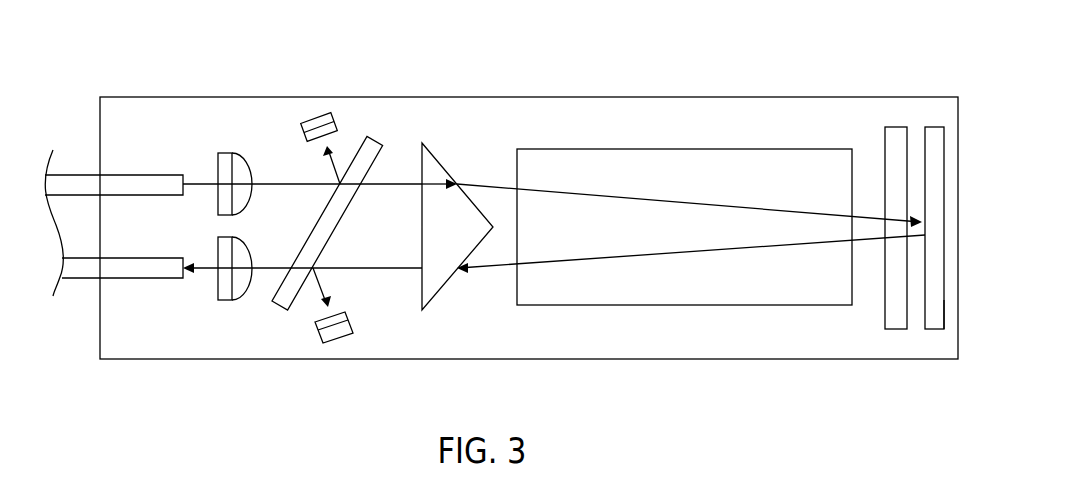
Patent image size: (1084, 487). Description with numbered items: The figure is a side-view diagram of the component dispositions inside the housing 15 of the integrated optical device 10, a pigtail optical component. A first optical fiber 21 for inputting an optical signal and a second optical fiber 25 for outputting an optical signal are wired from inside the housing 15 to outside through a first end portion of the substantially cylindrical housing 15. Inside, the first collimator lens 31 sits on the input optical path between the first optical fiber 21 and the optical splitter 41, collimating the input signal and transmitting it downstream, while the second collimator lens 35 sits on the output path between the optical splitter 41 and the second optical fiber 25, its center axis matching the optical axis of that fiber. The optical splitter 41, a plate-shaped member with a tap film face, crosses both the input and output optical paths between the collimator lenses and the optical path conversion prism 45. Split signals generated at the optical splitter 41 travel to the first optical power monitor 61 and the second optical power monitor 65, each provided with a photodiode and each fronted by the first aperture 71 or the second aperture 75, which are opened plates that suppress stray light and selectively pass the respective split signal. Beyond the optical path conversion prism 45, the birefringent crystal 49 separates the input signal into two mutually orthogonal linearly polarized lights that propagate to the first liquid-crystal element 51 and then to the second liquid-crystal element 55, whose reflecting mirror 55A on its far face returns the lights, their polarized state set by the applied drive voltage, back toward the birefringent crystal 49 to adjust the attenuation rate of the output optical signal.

The integrated optical device 10 is at (627, 96).
The housing 15 is at (536, 96).
The first optical fiber 21 is at (140, 175).
The second optical fiber 25 is at (145, 280).
The first collimator lens 31 is at (240, 153).
The second collimator lens 35 is at (236, 300).
The optical splitter 41 is at (379, 138).
The optical path conversion prism 45 is at (437, 150).
The birefringent crystal 49 is at (707, 149).
The first liquid-crystal element 51 is at (888, 127).
The second liquid-crystal element 55 is at (930, 127).
The reflecting mirror 55A is at (943, 318).
The first optical power monitor 61 is at (307, 118).
The second optical power monitor 65 is at (340, 345).
The first aperture 71 is at (338, 125).
The second aperture 75 is at (357, 316).